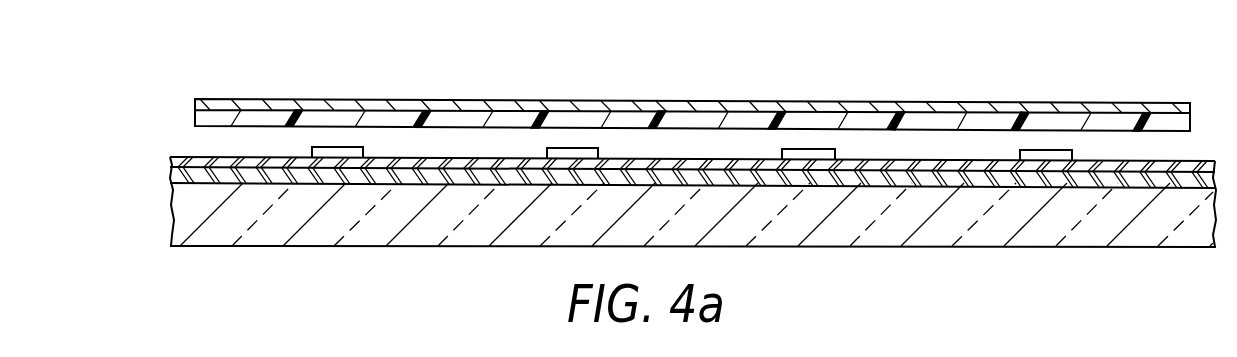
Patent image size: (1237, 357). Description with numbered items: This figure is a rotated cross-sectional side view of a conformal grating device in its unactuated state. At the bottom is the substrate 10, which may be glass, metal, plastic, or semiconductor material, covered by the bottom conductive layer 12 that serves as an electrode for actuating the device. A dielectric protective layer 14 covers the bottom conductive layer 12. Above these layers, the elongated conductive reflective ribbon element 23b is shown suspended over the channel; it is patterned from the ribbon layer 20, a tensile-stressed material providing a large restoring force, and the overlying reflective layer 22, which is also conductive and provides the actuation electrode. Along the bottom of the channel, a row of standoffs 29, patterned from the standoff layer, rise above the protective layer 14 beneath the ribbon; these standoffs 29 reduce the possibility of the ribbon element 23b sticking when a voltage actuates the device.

The substrate 10 is at (180, 220).
The bottom conductive layer 12 is at (173, 172).
The dielectric protective layer 14 is at (171, 160).
The ribbon layer 20 is at (197, 117).
The reflective layer 22 is at (233, 101).
The conductive reflective ribbon element 23b is at (427, 108).
The standoffs 29 is at (330, 148).